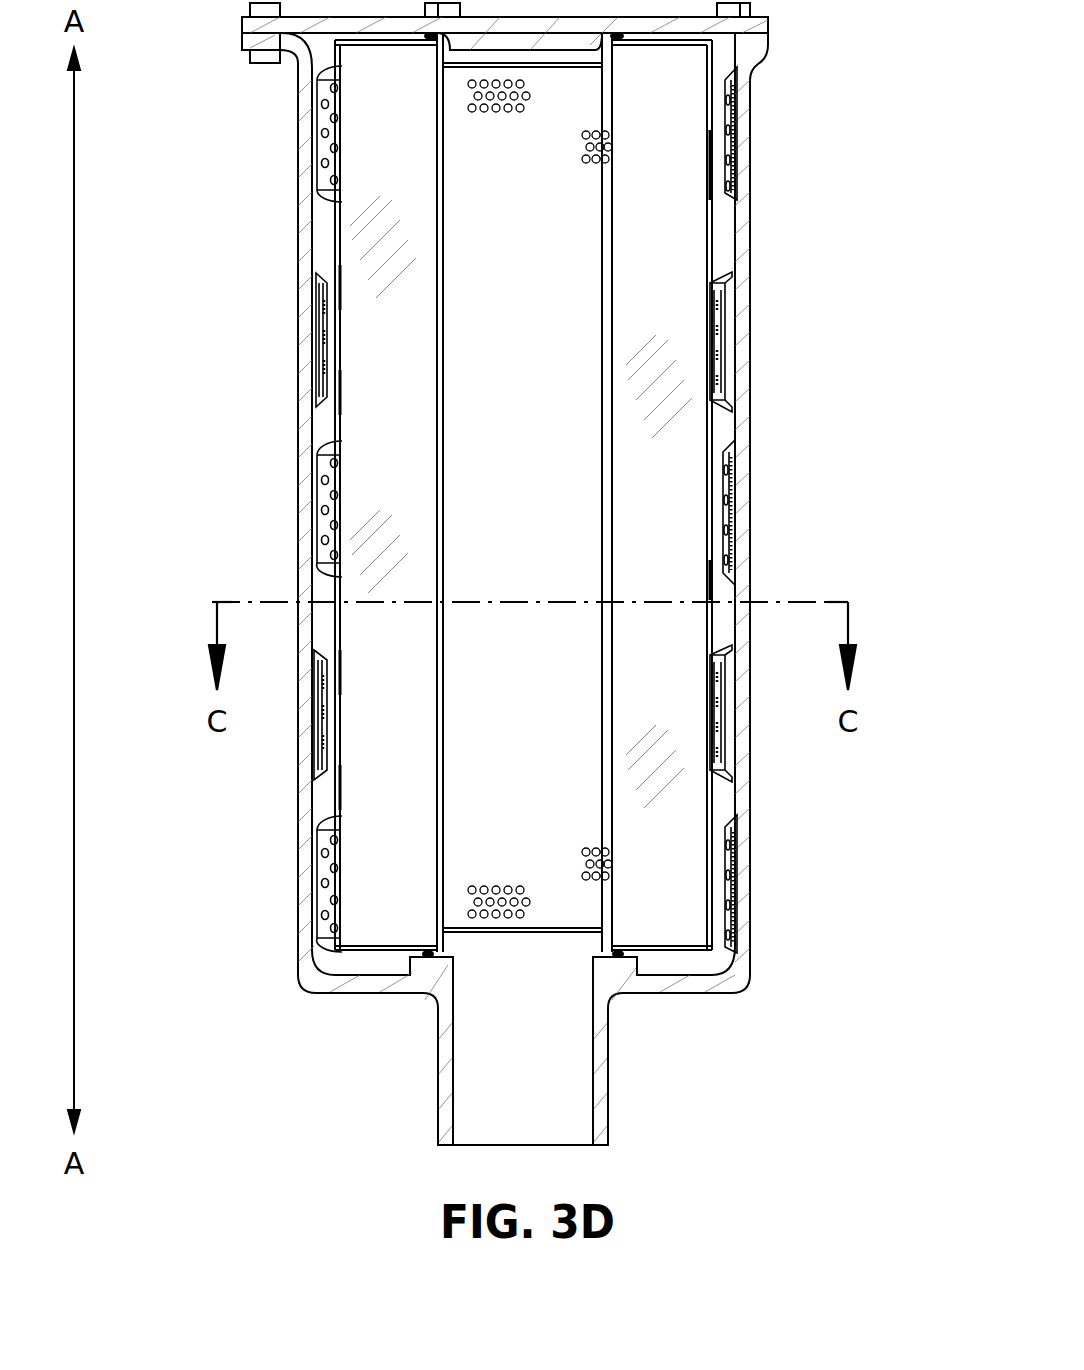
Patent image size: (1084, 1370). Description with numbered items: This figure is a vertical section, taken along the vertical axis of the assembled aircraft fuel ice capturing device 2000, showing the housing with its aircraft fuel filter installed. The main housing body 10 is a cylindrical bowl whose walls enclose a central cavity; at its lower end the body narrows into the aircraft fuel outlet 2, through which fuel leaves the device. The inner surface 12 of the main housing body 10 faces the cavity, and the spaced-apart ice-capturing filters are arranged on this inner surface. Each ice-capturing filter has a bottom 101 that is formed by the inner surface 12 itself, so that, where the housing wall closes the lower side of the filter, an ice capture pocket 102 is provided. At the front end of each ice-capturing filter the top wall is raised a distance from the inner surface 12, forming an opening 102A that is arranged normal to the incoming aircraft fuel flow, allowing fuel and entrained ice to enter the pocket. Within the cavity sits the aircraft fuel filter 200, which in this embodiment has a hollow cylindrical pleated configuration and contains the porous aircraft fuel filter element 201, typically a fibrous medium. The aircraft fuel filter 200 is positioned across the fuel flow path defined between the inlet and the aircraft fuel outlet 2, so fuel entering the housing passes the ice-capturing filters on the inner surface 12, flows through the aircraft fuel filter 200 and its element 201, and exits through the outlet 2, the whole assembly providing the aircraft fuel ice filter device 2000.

The main housing body 10 is at (592, 574).
The aircraft fuel outlet 2 is at (565, 1067).
The inner surface 12 is at (722, 234).
The bottom 101 is at (738, 300).
The ice capture pocket 102 is at (718, 330).
The opening 102A is at (721, 527).
The aircraft fuel filter 200 is at (372, 383).
The aircraft fuel filter element 201 is at (375, 496).
The aircraft fuel ice capturing device 2000 is at (185, 809).